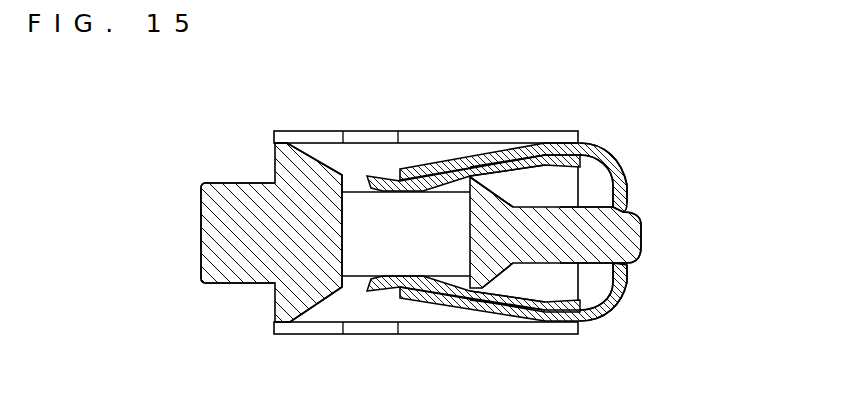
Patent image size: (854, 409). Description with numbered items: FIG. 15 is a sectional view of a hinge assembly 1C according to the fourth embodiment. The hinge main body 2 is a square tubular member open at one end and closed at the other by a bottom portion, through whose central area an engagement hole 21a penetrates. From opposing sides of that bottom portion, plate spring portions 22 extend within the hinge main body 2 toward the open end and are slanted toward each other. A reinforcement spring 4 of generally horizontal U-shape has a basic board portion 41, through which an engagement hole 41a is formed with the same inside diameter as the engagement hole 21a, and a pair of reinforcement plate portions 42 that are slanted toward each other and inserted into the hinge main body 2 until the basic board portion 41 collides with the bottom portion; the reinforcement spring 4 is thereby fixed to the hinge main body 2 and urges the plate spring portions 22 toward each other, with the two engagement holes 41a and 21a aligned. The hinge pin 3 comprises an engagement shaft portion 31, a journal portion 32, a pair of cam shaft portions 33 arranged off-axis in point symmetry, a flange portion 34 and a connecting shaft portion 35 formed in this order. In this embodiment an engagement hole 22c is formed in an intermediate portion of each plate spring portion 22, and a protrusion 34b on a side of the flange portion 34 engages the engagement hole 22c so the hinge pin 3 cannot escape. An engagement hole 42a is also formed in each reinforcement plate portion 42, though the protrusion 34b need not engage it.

The hinge assembly 1C is at (472, 209).
The hinge main body 2 is at (433, 199).
The hinge pin 3 is at (335, 228).
The reinforcement spring 4 is at (571, 225).
The engagement hole 21a is at (631, 210).
The plate spring portion 22 is at (418, 172).
The engagement hole 22c is at (482, 163).
The engagement shaft portion 31 is at (219, 284).
The journal portion 32 is at (312, 314).
The cam shaft portion 33 is at (357, 258).
The flange portion 34 is at (543, 209).
The protrusion 34b is at (470, 176).
The connecting shaft portion 35 is at (585, 323).
The basic board portion 41 is at (629, 190).
The engagement hole 41a is at (642, 250).
The reinforcement plate portion 42 is at (532, 143).
The engagement hole 42a is at (500, 153).